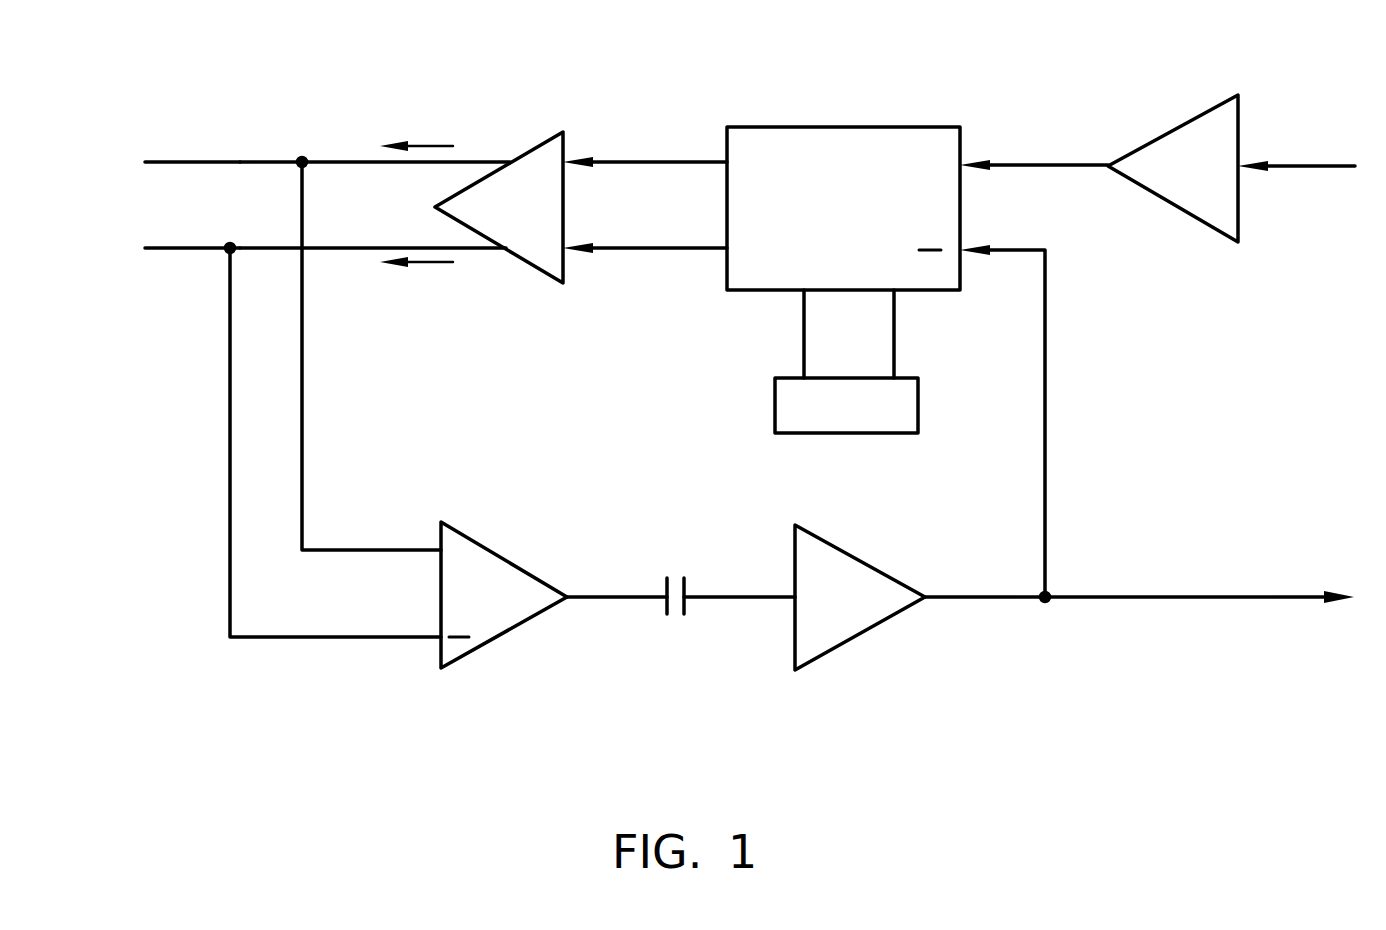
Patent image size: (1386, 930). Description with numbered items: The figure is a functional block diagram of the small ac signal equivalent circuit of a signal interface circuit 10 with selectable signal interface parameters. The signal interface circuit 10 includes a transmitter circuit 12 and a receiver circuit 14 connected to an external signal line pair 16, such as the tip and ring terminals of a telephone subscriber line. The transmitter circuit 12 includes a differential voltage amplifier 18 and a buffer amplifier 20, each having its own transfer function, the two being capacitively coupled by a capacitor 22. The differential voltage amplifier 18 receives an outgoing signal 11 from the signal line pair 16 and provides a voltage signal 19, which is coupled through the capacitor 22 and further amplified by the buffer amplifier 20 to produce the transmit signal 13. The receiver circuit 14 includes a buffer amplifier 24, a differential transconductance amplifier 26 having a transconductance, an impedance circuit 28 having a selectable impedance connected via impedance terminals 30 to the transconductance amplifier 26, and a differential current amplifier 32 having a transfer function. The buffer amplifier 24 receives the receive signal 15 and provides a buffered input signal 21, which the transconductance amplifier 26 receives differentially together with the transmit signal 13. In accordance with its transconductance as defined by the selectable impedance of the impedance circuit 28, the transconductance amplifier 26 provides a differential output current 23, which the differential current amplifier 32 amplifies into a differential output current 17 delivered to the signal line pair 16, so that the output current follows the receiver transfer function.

The signal interface circuit 10 is at (940, 764).
The outgoing signal 11 is at (299, 405).
The transmitter circuit 12 is at (643, 543).
The transmit signal 13 is at (975, 600).
The receiver circuit 14 is at (612, 341).
The receive signal 15 is at (1300, 165).
The signal line pair 16 is at (187, 162).
The differential output current 17 is at (333, 248).
The differential voltage amplifier 18 is at (498, 556).
The voltage signal 19 is at (610, 600).
The buffer amplifier 20 is at (855, 558).
The buffered input signal 21 is at (1032, 165).
The capacitor 22 is at (686, 605).
The differential output current 23 is at (672, 248).
The buffer amplifier 24 is at (1210, 110).
The differential transconductance amplifier 26 is at (843, 127).
The impedance circuit 28 is at (880, 433).
The impedance terminals 30 is at (804, 297).
The differential current amplifier 32 is at (536, 148).